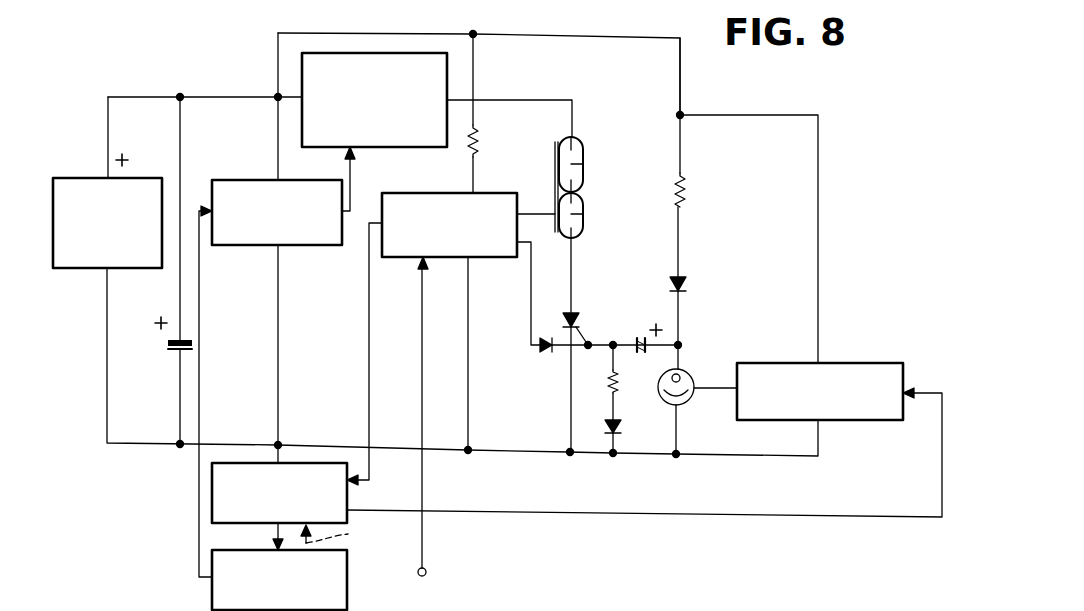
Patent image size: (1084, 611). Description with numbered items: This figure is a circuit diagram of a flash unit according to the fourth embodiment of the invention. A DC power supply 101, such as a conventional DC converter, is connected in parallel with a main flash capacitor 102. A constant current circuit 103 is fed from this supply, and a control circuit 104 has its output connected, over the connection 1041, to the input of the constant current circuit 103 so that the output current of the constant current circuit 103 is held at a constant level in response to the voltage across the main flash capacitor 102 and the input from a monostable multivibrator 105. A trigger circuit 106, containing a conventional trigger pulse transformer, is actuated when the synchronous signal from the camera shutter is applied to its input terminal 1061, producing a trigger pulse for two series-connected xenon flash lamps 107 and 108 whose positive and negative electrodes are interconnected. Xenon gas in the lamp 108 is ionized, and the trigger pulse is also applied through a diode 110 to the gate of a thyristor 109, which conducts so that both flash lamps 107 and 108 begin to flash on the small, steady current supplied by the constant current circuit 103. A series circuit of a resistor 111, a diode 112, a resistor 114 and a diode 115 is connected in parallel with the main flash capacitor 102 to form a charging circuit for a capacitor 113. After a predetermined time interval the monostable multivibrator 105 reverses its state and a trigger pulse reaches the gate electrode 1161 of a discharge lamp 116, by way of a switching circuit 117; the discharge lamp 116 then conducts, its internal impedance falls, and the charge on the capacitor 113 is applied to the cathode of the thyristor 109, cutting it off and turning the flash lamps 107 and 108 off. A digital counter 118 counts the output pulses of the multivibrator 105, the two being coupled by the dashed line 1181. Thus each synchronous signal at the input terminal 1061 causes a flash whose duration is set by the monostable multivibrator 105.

The DC power supply 101 is at (86, 178).
The main flash capacitor 102 is at (152, 270).
The constant current circuit 103 is at (300, 80).
The control circuit 104 is at (258, 180).
The control signal line to constant current circuit 1041 is at (352, 170).
The monostable multivibrator 105 is at (212, 499).
The trigger circuit 106 is at (482, 194).
The input terminal 1061 is at (426, 569).
The flash lamp 107 is at (580, 164).
The flash lamp 108 is at (581, 214).
The thyristor 109 is at (570, 313).
The diode 110 is at (547, 352).
The resistor 111 is at (686, 188).
The diode 112 is at (687, 285).
The capacitor 113 is at (640, 338).
The resistor 114 is at (619, 383).
The diode 115 is at (620, 432).
The discharge lamp 116 is at (689, 399).
The gate electrode 1161 is at (687, 372).
The switching circuit 117 is at (843, 363).
The digital counter 118 is at (212, 592).
The counter feedback signal line 1181 is at (349, 535).